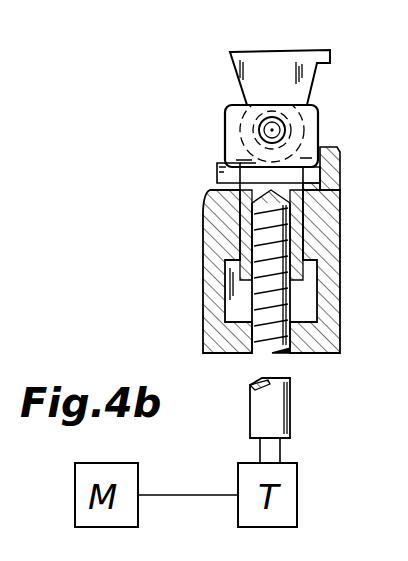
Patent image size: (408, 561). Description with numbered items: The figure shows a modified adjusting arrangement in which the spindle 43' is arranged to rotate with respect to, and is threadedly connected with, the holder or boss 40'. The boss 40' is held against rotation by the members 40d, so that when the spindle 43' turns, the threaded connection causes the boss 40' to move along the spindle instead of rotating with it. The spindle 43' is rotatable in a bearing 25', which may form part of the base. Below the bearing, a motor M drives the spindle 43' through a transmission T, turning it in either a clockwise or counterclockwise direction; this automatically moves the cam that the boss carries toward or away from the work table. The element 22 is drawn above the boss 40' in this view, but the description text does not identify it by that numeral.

The guide funnel 22 is at (241, 66).
The holder or boss 40' is at (258, 132).
The members 40d is at (337, 166).
The bearing 25' is at (252, 271).
The spindle 43' is at (249, 393).